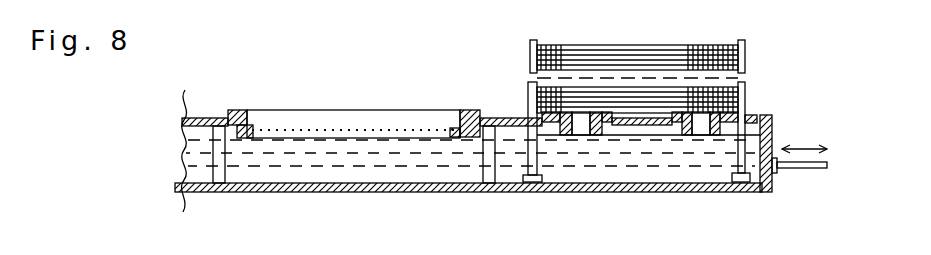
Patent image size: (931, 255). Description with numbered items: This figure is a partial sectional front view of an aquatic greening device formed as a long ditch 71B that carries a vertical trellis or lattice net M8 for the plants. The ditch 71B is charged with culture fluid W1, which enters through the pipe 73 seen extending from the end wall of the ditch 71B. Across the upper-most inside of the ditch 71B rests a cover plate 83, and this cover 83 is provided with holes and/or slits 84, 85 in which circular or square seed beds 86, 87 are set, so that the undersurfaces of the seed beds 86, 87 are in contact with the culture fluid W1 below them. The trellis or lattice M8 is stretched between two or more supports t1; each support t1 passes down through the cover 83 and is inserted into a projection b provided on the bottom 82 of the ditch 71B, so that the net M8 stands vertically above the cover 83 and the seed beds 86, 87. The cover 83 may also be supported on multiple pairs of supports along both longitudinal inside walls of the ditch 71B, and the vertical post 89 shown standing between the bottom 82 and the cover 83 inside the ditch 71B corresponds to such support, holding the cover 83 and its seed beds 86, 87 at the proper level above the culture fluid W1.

The long ditch 71B is at (400, 194).
The culture fluid W1 is at (470, 159).
The holes and/or slits 84 is at (231, 128).
The seed bed 86 is at (358, 132).
The support post 89 is at (492, 168).
The vertical trellis or lattice net M8 is at (637, 64).
The cover plate 83 is at (522, 117).
The seed bed 87 is at (583, 128).
The bottom 82 is at (622, 176).
The holes and/or slits 85 is at (723, 130).
The support t1 is at (745, 102).
The projection b is at (738, 183).
The pipe 73 is at (797, 169).